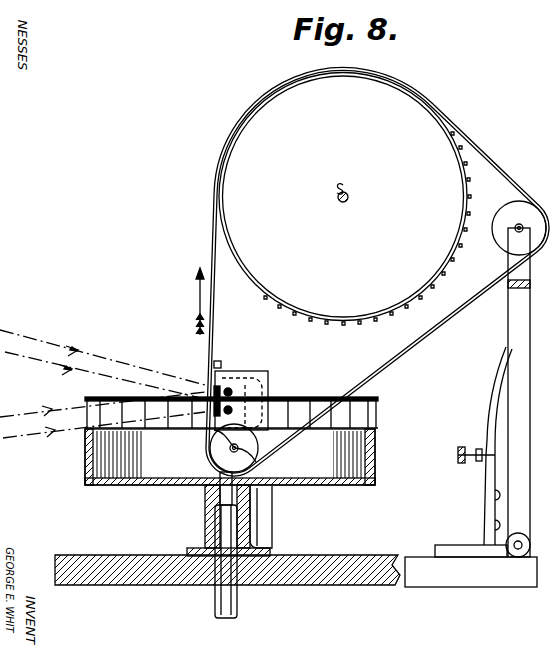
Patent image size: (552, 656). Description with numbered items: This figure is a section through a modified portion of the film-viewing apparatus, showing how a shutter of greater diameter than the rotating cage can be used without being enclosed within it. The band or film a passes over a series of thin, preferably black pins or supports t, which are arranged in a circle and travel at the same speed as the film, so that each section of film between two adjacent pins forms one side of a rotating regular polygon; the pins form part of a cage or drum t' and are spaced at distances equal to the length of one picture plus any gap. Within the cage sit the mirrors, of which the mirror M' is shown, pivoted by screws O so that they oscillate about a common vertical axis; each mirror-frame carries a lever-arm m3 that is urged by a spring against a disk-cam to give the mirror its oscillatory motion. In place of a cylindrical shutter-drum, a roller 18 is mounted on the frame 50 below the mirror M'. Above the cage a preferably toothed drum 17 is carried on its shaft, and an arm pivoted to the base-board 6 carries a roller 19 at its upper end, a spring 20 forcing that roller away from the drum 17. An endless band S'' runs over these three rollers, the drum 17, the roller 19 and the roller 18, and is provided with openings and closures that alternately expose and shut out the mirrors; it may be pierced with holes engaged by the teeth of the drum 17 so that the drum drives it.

The drum 17 is at (345, 199).
The spring 20 is at (498, 414).
The roller 19 is at (490, 379).
The pulley 18 is at (234, 449).
The frame 50 is at (268, 380).
The base-board 6 is at (296, 571).
The endless band S'' is at (372, 272).
The mirror M' is at (241, 387).
The lever-arm m3 is at (245, 406).
The screws O is at (220, 369).
The band or film a is at (231, 441).
The pins or supports t is at (328, 417).
The cage or drum t' is at (331, 459).